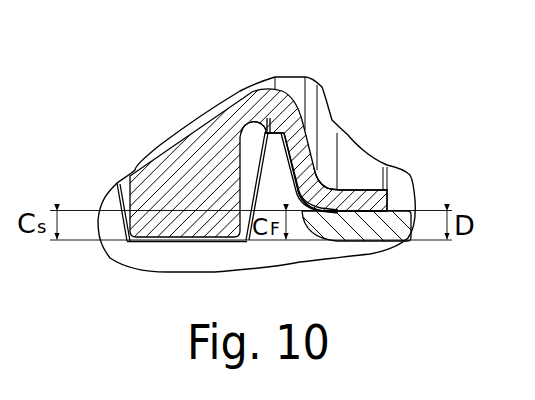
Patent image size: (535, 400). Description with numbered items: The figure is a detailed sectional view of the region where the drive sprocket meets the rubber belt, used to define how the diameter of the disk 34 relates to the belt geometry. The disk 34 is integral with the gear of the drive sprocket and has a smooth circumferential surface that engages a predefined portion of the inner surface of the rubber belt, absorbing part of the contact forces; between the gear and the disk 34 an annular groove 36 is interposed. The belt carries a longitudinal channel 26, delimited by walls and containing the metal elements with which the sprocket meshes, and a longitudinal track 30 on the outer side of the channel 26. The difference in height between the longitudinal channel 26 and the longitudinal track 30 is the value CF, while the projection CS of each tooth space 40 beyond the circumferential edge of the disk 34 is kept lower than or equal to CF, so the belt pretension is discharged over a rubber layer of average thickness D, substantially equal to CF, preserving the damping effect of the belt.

The longitudinal channel 26 is at (212, 242).
The longitudinal track 30 is at (336, 214).
The disk 34 is at (350, 197).
The annular groove 36 is at (257, 128).
The tooth space 40 is at (178, 231).